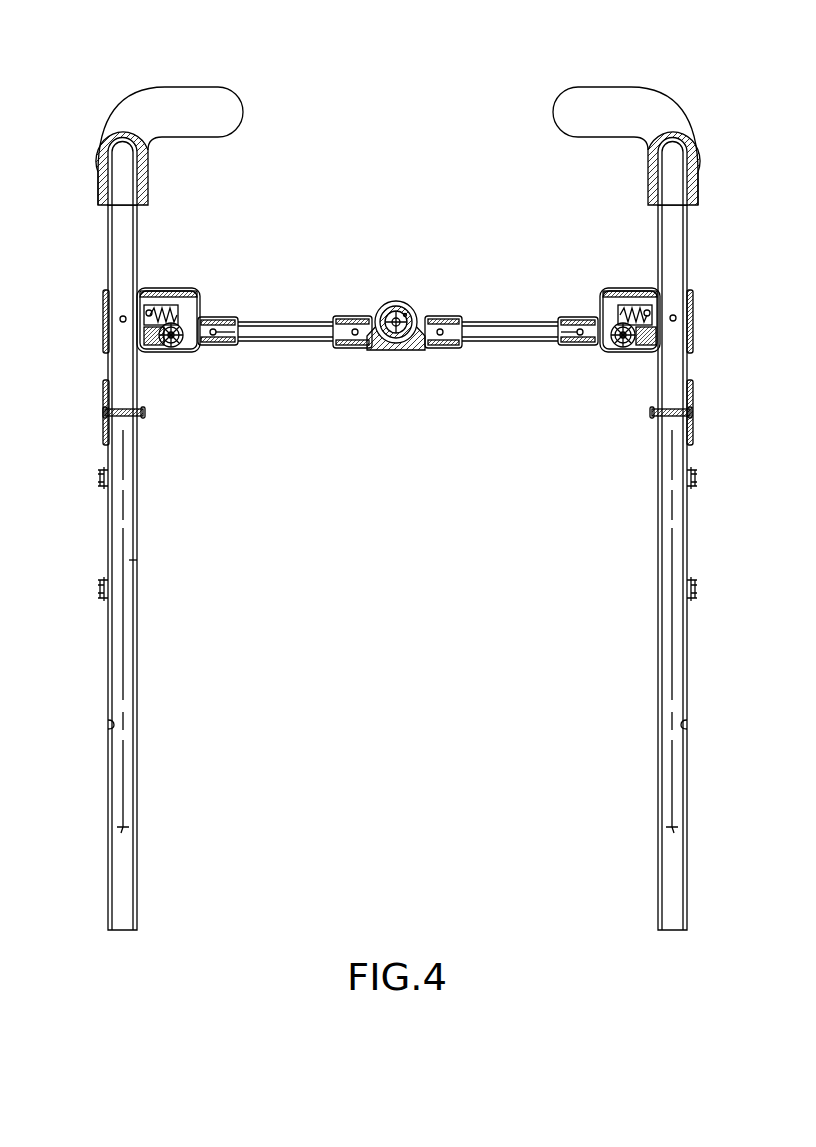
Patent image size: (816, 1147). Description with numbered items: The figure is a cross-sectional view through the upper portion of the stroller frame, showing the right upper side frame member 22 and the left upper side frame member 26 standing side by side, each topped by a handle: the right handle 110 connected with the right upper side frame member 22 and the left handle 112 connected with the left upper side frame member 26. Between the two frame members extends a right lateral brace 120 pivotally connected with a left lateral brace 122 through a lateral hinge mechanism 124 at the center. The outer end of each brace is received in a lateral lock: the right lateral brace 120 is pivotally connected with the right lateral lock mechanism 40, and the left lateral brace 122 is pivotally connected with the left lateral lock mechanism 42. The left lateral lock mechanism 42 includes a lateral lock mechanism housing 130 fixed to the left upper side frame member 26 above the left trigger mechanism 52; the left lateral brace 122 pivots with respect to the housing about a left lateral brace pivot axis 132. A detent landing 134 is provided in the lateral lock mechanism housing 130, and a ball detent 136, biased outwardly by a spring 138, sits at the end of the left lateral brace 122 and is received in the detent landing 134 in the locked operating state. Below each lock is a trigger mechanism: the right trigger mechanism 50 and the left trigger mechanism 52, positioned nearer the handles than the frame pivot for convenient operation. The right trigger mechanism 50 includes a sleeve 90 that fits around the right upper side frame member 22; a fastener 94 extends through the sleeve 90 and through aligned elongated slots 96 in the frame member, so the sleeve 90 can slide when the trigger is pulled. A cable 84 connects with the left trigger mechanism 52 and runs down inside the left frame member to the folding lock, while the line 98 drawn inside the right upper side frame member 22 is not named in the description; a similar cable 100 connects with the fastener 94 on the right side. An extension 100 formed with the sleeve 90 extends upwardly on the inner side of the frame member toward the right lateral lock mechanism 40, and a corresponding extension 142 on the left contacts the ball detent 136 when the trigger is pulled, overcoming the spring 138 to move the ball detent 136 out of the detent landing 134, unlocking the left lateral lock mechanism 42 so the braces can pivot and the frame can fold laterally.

The right upper side frame member 22 is at (137, 578).
The left upper side frame member 26 is at (683, 545).
The right lateral lock mechanism 40 is at (167, 268).
The left lateral lock mechanism 42 is at (652, 341).
The right trigger mechanism 50 is at (126, 480).
The left trigger mechanism 52 is at (668, 480).
The cable 84 is at (672, 580).
The sleeve 90 is at (138, 428).
The fastener 94 is at (108, 432).
The elongated slots 96 is at (106, 390).
The inner rod 98 is at (121, 508).
The extension 100 is at (140, 360).
The right handle 110 is at (191, 97).
The left handle 112 is at (592, 97).
The right lateral brace 120 is at (279, 332).
The left lateral brace 122 is at (512, 334).
The lateral hinge mechanism 124 is at (400, 368).
The lateral lock mechanism housing 130 is at (628, 292).
The left lateral brace pivot axis 132 is at (608, 350).
The detent landing 134 is at (660, 310).
The ball detent 136 is at (662, 295).
The spring 138 is at (618, 310).
The extension 142 is at (692, 400).